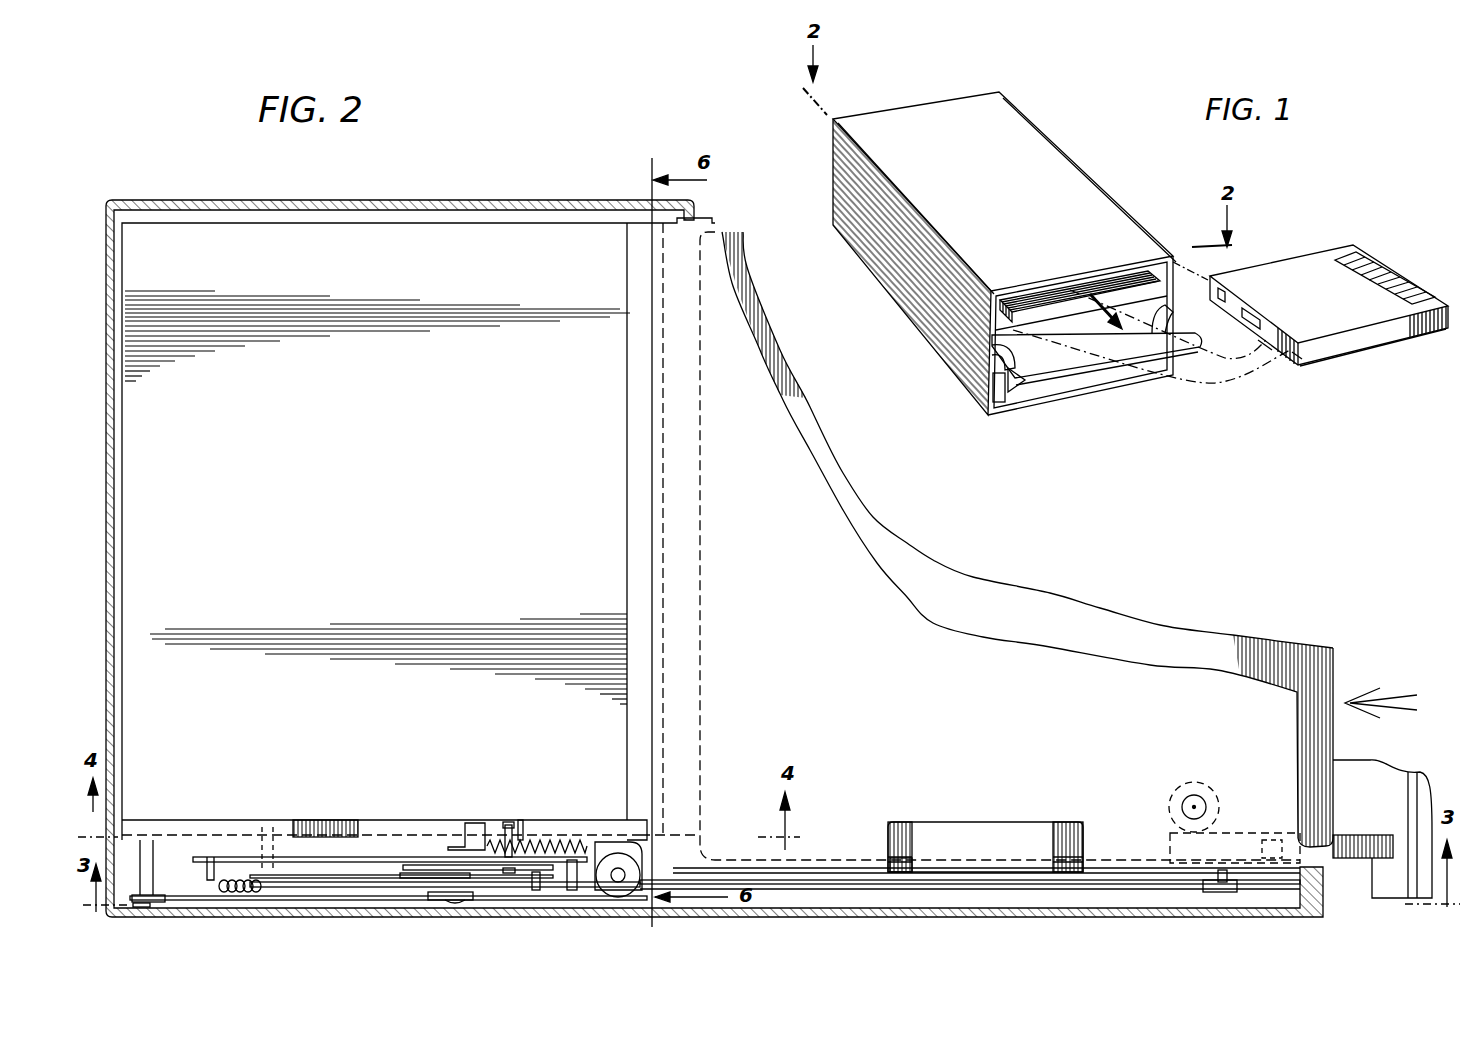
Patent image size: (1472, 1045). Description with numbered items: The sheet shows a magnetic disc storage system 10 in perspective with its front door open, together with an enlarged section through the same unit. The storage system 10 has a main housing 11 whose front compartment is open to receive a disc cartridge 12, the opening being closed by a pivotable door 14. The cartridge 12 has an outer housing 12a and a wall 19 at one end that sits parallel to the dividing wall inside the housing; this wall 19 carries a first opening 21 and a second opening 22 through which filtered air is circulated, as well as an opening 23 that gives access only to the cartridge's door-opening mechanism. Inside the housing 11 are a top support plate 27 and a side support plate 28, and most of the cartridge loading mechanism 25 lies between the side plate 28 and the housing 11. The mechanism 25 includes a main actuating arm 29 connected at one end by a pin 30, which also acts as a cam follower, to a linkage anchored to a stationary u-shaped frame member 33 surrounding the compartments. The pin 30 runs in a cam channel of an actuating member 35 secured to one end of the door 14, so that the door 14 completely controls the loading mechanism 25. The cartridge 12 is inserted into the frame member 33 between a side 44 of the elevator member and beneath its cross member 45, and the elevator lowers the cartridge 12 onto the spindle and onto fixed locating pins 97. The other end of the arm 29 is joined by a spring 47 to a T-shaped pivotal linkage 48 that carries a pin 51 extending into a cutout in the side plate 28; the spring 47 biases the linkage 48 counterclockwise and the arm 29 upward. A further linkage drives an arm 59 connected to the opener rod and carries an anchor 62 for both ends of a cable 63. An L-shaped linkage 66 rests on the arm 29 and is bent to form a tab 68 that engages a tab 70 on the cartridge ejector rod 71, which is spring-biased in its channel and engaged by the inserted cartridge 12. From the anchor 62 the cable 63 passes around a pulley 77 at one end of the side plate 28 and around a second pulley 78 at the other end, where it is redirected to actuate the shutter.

In FIG. 2, the magnetic disc storage system 10 is at (1170, 577).
In FIG. 1, the magnetic disc storage system 10 is at (1075, 125).
In FIG. 2, the main housing 11 is at (482, 201).
In FIG. 1, the main housing 11 is at (921, 307).
In FIG. 2, the disc cartridge 12 is at (1233, 642).
In FIG. 1, the disc cartridge 12 is at (1352, 232).
In FIG. 1, the outer housing 12a is at (1378, 357).
In FIG. 2, the pivotable door 14 is at (1370, 777).
In FIG. 1, the pivotable door 14 is at (1045, 367).
In FIG. 1, the wall 19 is at (1266, 344).
In FIG. 1, the first opening 21 is at (1257, 315).
In FIG. 1, the second opening 22 is at (1223, 290).
In FIG. 1, the opening 23 is at (1298, 359).
In FIG. 2, the cartridge loading mechanism 25 is at (437, 772).
In FIG. 2, the top support plate 27 is at (377, 497).
In FIG. 2, the side support plate 28 is at (364, 828).
In FIG. 2, the main actuating arm 29 is at (330, 887).
In FIG. 2, the pin 30 is at (1228, 878).
In FIG. 2, the u-shaped frame member 33 is at (1047, 705).
In FIG. 2, the actuating member 35 is at (1342, 838).
In FIG. 2, the side 44 is at (908, 868).
In FIG. 2, the cross member 45 is at (958, 840).
In FIG. 2, the spring 47 is at (230, 884).
In FIG. 2, the T-shaped pivotal linkage 48 is at (211, 857).
In FIG. 2, the pin 51 is at (507, 823).
In FIG. 2, the arm 59 is at (303, 883).
In FIG. 2, the anchor 62 is at (403, 887).
In FIG. 2, the cable 63 is at (283, 896).
In FIG. 2, the L-shaped linkage 66 is at (540, 845).
In FIG. 2, the tab 68 is at (475, 823).
In FIG. 2, the tab 70 is at (520, 820).
In FIG. 2, the cartridge ejector rod 71 is at (673, 818).
In FIG. 2, the pulley 77 is at (167, 893).
In FIG. 2, the second pulley 78 is at (652, 870).
In FIG. 2, the fixed locating pins 97 is at (1210, 795).